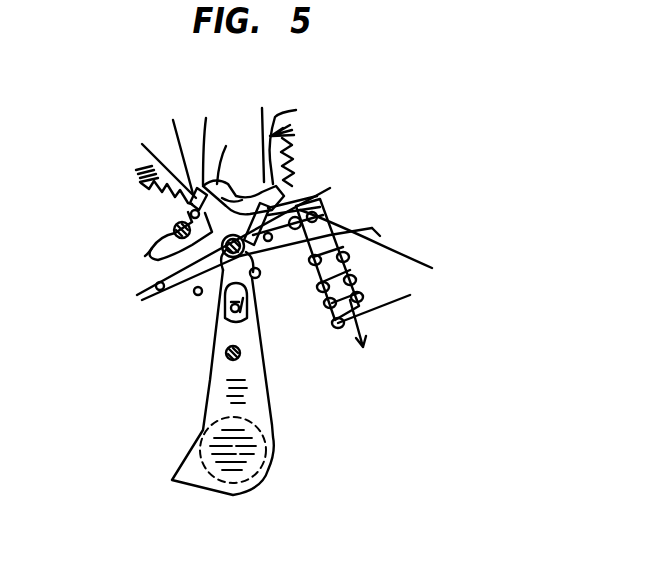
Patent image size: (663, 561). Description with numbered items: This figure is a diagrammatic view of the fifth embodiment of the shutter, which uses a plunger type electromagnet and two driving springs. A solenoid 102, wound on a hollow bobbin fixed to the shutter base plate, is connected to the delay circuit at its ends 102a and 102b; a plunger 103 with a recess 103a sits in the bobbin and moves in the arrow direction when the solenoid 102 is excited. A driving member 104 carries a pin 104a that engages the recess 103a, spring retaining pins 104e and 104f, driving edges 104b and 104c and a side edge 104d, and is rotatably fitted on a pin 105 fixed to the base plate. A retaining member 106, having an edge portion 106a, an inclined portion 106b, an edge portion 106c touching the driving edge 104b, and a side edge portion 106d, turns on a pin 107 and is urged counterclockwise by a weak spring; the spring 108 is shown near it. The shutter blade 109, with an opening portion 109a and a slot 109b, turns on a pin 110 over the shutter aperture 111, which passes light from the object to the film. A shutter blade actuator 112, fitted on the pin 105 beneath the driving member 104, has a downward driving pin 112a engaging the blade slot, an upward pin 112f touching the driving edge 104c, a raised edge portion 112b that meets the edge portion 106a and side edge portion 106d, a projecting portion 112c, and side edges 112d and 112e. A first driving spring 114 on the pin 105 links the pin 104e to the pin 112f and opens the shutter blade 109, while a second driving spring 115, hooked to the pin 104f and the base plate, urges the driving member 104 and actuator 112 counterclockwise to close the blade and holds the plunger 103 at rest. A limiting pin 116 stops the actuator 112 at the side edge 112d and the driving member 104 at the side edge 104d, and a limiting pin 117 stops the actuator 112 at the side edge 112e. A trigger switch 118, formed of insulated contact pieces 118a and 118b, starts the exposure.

The solenoid 102 is at (353, 280).
The end of solenoid 102a is at (372, 228).
The end of solenoid 102b is at (375, 310).
The plunger 103 is at (365, 302).
The recess 103a is at (318, 217).
The driving member 104 is at (160, 290).
The pin 104a is at (320, 220).
The driving edge 104b is at (198, 295).
The driving edge 104c is at (307, 207).
The side edge 104d is at (270, 250).
The spring retaining pin 104e is at (262, 240).
The spring retaining pin 104f is at (390, 246).
The pin 105 is at (271, 273).
The retaining member 106 is at (164, 242).
The edge portion 106a is at (214, 138).
The inclined portion 106b is at (234, 151).
The edge portion 106c is at (150, 256).
The side edge portion 106d is at (142, 158).
The pin 107 is at (173, 229).
The spring 108 is at (140, 184).
The shutter blade 109 is at (262, 375).
The opening portion 109a is at (190, 453).
The slot 109b is at (254, 280).
The pin 110 is at (240, 360).
The shutter aperture 111 is at (262, 495).
The shutter blade actuator 112 is at (257, 278).
The shutter blade driving pin 112a is at (217, 337).
The edge portion 112b is at (169, 143).
The projecting portion 112c is at (273, 190).
The side edge portion 112d is at (268, 280).
The side edge portion 112e is at (220, 290).
The pin 112f is at (283, 197).
The first driving spring 114 is at (237, 251).
The second driving spring 115 is at (294, 148).
The limiting pin 116 is at (265, 272).
The limiting pin 117 is at (220, 293).
The trigger switch 118 is at (235, 195).
The contact piece 118a is at (305, 134).
The contact piece 118b is at (269, 130).